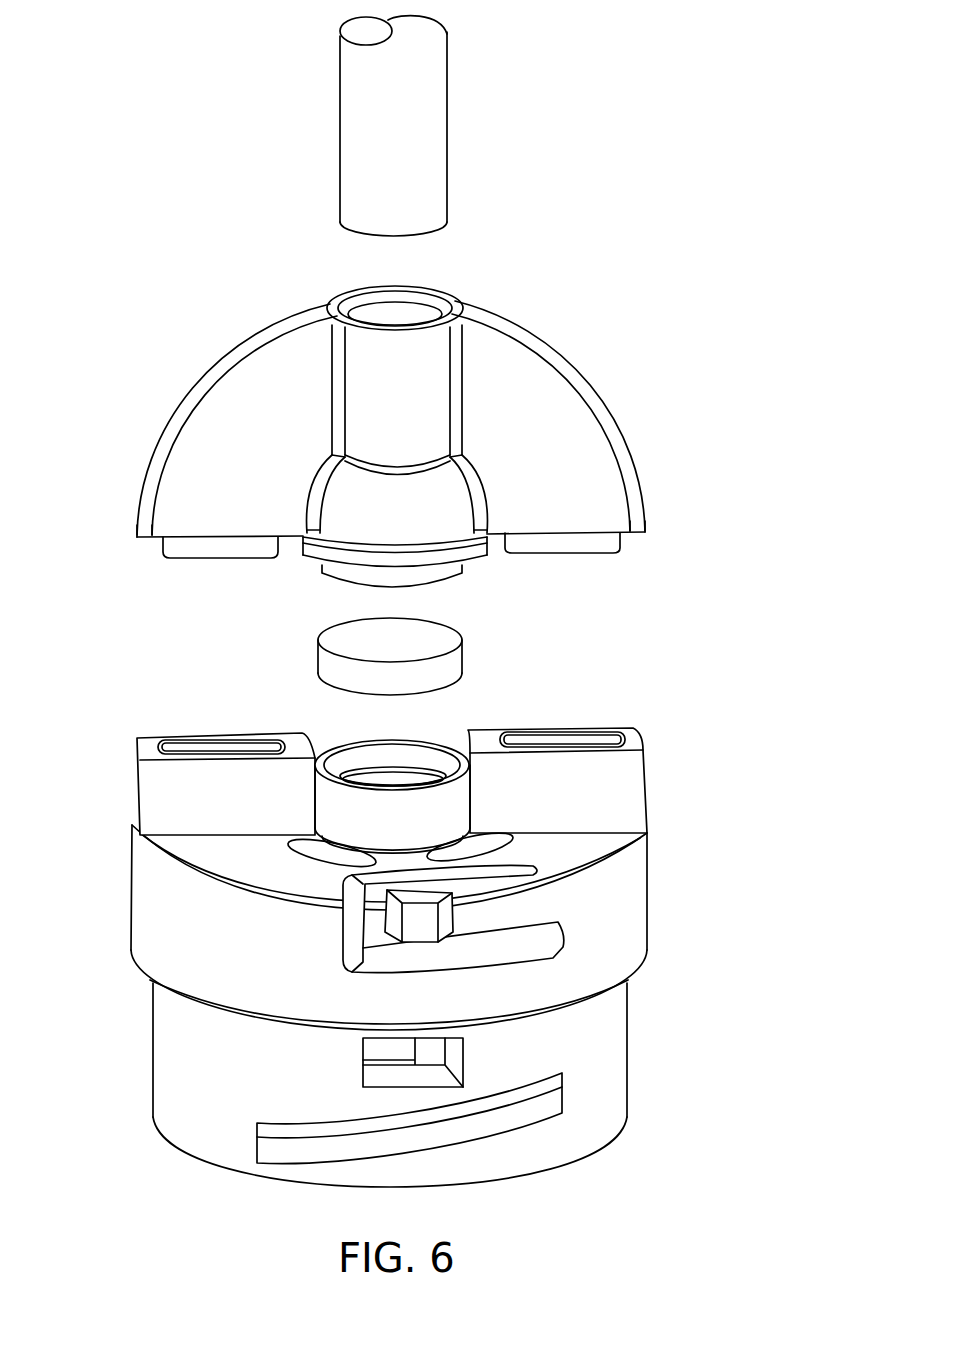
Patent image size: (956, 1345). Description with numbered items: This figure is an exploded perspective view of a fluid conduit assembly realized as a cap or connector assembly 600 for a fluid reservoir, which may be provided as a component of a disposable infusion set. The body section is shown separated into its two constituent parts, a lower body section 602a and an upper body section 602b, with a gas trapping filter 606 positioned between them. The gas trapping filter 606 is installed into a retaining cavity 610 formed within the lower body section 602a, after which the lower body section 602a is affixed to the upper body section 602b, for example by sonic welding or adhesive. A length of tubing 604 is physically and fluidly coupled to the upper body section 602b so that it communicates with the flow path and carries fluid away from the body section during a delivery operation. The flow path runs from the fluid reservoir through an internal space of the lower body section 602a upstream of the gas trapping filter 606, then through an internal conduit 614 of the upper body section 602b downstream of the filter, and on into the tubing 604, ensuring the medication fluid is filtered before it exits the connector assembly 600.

The connector assembly 600 is at (735, 15).
The tubing 604 is at (437, 132).
The conduit of the upper body section 614 is at (364, 301).
The upper body section 602b is at (367, 406).
The gas trapping filter 606 is at (458, 657).
The retaining cavity 610 is at (357, 755).
The lower body section 602a is at (344, 932).